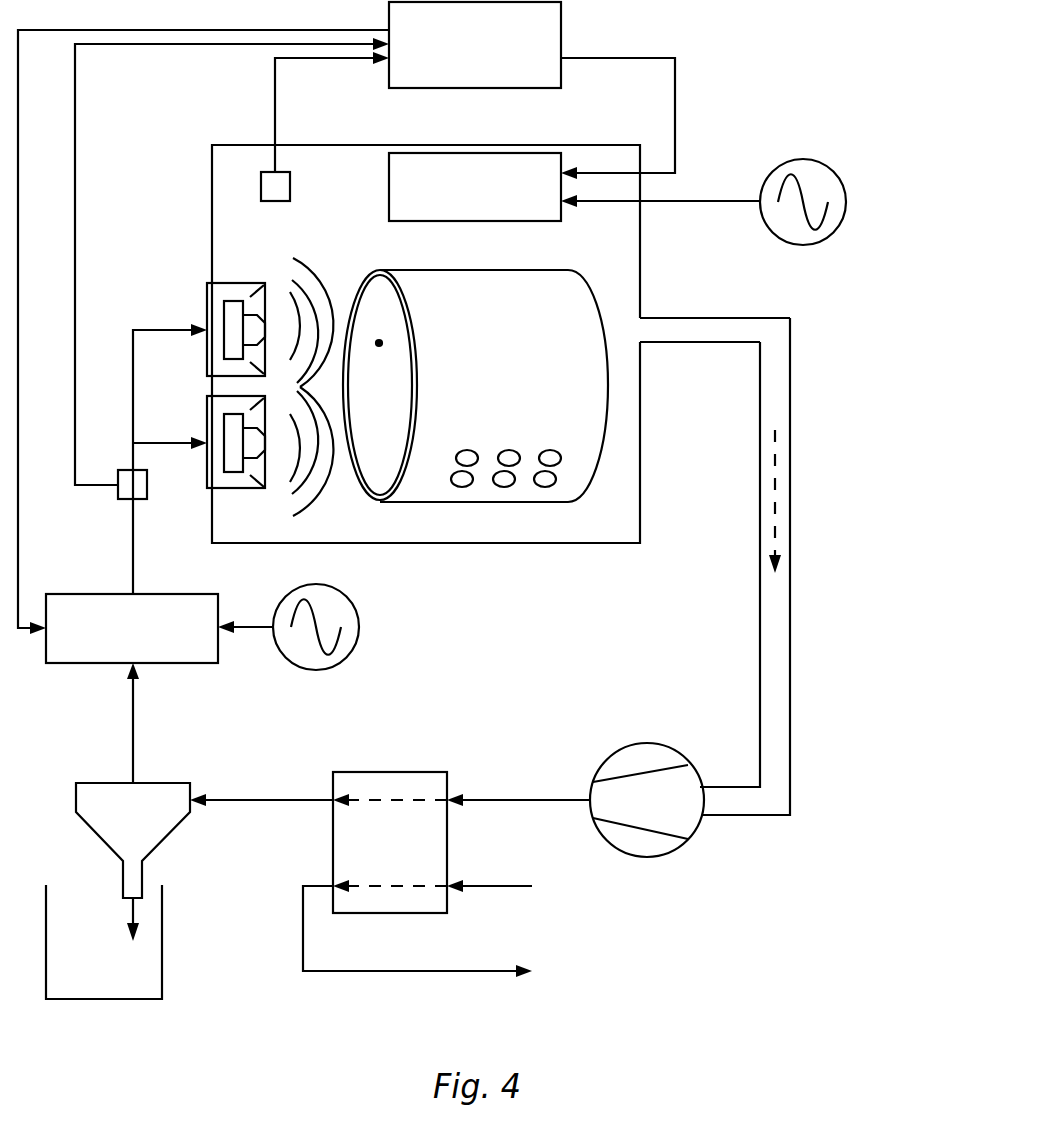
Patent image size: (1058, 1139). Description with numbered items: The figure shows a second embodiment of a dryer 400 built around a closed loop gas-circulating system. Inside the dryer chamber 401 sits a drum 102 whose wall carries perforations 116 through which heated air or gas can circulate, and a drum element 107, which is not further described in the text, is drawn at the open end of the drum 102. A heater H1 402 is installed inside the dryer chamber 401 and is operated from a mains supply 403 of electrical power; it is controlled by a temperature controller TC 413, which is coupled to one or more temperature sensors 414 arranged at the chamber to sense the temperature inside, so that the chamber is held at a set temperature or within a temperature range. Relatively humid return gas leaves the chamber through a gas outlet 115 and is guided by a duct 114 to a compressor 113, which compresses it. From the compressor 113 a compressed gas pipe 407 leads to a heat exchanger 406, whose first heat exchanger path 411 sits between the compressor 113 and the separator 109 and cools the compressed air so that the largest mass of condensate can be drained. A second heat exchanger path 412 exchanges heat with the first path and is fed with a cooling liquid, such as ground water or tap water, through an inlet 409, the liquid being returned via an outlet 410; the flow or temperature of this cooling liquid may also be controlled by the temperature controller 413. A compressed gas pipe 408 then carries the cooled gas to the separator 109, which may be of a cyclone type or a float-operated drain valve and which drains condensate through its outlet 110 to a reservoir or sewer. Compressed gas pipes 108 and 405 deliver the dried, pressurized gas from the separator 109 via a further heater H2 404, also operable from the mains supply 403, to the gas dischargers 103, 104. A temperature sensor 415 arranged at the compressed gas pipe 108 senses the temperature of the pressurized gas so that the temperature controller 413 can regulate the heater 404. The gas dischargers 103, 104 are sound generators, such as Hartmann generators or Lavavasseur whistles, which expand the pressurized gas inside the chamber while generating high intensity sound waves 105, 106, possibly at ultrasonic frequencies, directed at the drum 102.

The drum 102 is at (481, 398).
The gas discharger 103 is at (230, 283).
The gas discharger 104 is at (230, 488).
The high intensity sound waves 105 is at (318, 284).
The high intensity sound waves 106 is at (322, 490).
The workpiece 107 is at (379, 343).
The compressed gas pipe 108 is at (133, 540).
The separator 109 is at (185, 783).
The outlet 110 is at (162, 958).
The compressor 113 is at (630, 743).
The duct 114 is at (790, 598).
The gas outlet 115 is at (640, 320).
The perforations 116 is at (496, 441).
The dryer 400 is at (748, 106).
The dryer chamber 401 is at (307, 145).
The heater H1 402 is at (517, 199).
The mains supply 403 is at (846, 194).
The heater H2 404 is at (174, 641).
The compressed gas pipe 405 is at (133, 705).
The heat exchanger 406 is at (371, 858).
The compressed gas pipe 407 is at (498, 800).
The compressed gas pipe 408 is at (232, 802).
The inlet 409 is at (503, 886).
The outlet 410 is at (505, 971).
The first heat exchanger path 411 is at (370, 800).
The second heat exchanger path 412 is at (375, 887).
The temperature controller TC 413 is at (517, 58).
The temperature sensor 414 is at (290, 201).
The temperature sensor 415 is at (118, 487).